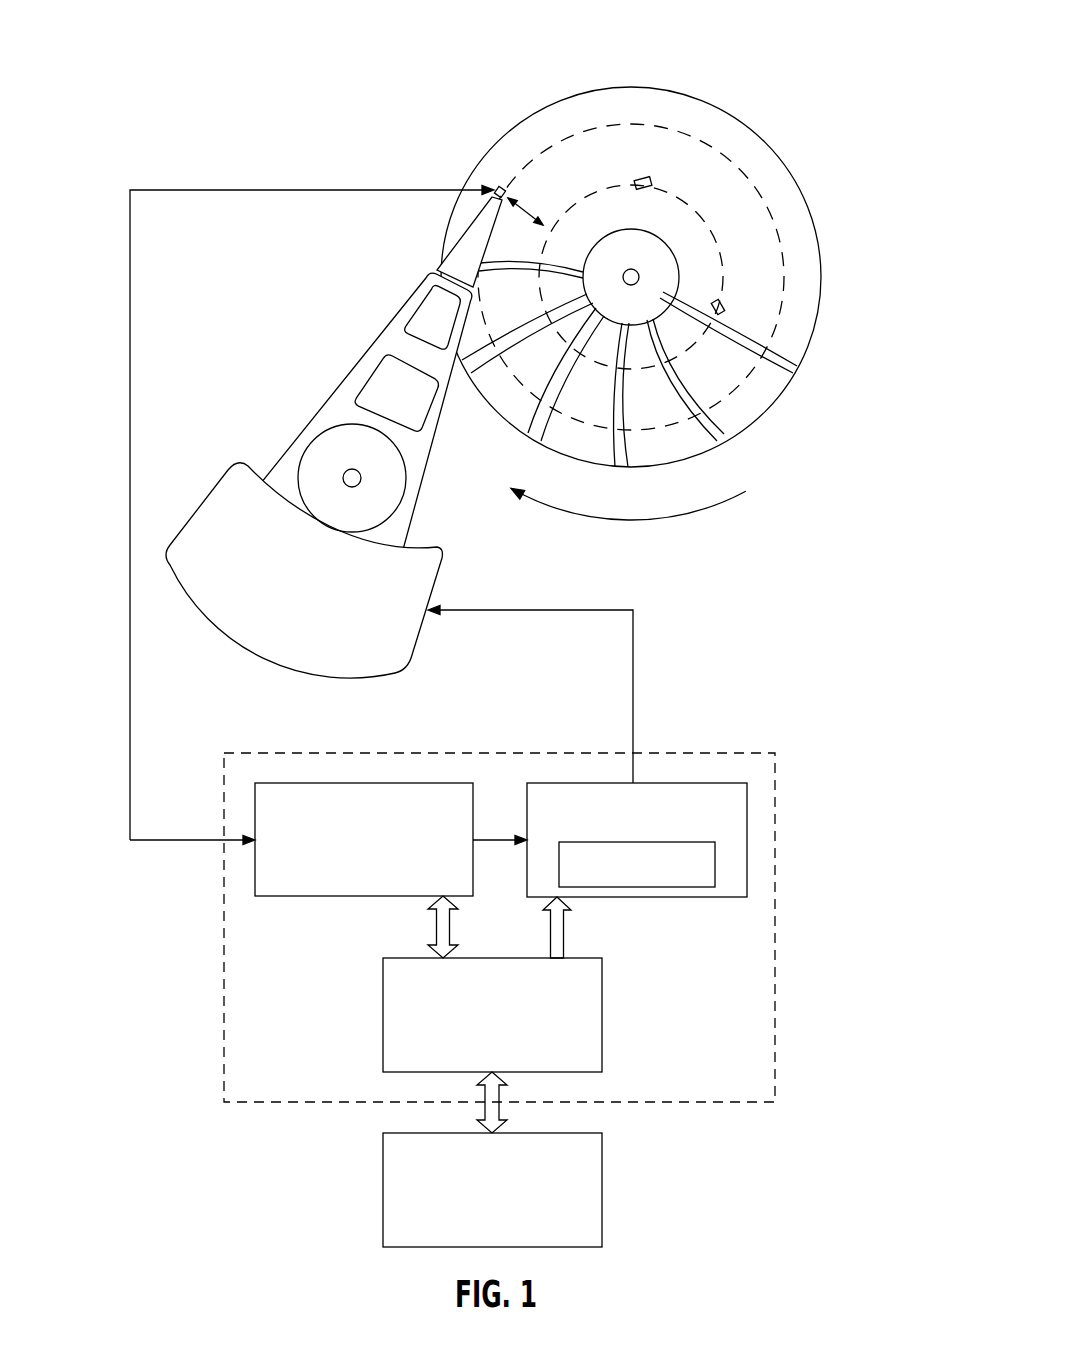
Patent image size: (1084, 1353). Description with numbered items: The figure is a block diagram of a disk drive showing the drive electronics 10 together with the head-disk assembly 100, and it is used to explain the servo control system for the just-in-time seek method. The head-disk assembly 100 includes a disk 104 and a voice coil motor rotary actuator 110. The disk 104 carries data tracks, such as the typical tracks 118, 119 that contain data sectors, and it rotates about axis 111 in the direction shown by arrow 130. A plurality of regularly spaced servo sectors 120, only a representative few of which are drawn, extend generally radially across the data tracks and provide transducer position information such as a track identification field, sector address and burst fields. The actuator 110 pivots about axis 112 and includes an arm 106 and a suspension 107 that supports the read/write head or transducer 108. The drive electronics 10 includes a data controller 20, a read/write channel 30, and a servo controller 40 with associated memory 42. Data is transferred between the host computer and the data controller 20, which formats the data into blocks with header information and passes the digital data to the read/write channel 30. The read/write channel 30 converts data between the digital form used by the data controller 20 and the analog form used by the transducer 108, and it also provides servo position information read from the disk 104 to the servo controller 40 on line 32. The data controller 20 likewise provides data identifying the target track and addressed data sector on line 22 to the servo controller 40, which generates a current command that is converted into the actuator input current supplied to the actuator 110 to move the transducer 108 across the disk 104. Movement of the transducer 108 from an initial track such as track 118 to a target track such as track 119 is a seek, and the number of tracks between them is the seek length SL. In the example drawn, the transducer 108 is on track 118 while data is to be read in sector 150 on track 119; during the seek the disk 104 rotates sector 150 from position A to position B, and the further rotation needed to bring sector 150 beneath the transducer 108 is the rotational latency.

The head-disk assembly 100 is at (298, 60).
The disk 104 is at (550, 103).
The arm 106 is at (424, 284).
The suspension 107 is at (457, 246).
The read/write head 108 is at (497, 186).
The voice coil motor rotary actuator 110 is at (213, 488).
The axis 111 is at (636, 272).
The axis 112 is at (343, 476).
The track 118 is at (725, 152).
The track 119 is at (723, 263).
The servo sectors 120 is at (790, 375).
The arrow 130 is at (628, 524).
The sector 150 is at (653, 184).
The drive electronics 10 is at (282, 753).
The data controller 20 is at (383, 1015).
The line 22 is at (565, 940).
The read/write channel 30 is at (327, 897).
The line 32 is at (477, 838).
The servo controller 40 is at (748, 842).
The memory 42 is at (717, 865).
The position A is at (633, 181).
The position B is at (728, 300).
The seek length SL is at (537, 216).